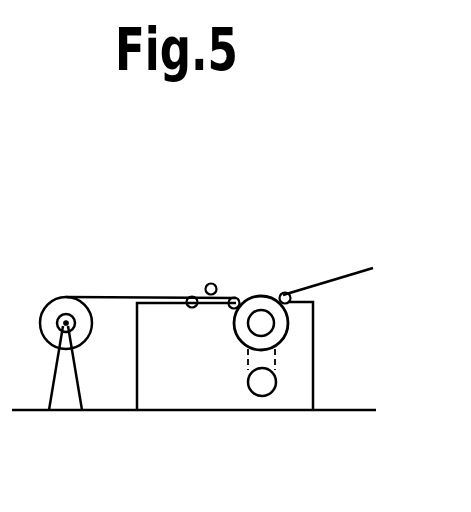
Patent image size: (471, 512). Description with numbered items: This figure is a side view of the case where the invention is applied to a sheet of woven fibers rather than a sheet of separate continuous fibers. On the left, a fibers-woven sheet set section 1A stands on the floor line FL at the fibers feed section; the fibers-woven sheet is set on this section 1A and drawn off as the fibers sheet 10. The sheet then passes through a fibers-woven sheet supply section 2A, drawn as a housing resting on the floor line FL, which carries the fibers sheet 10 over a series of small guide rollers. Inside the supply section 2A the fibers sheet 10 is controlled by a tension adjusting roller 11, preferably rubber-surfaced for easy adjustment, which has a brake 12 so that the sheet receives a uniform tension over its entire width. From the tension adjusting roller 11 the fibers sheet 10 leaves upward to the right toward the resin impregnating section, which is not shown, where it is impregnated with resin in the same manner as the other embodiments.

The fibers-woven sheet set section 1A is at (68, 415).
The fibers-woven sheet supply section 2A is at (222, 415).
The fibers sheet 10 is at (327, 279).
The tension adjusting roller 11 is at (260, 298).
The brake 12 is at (248, 386).
The floor line FL is at (212, 410).